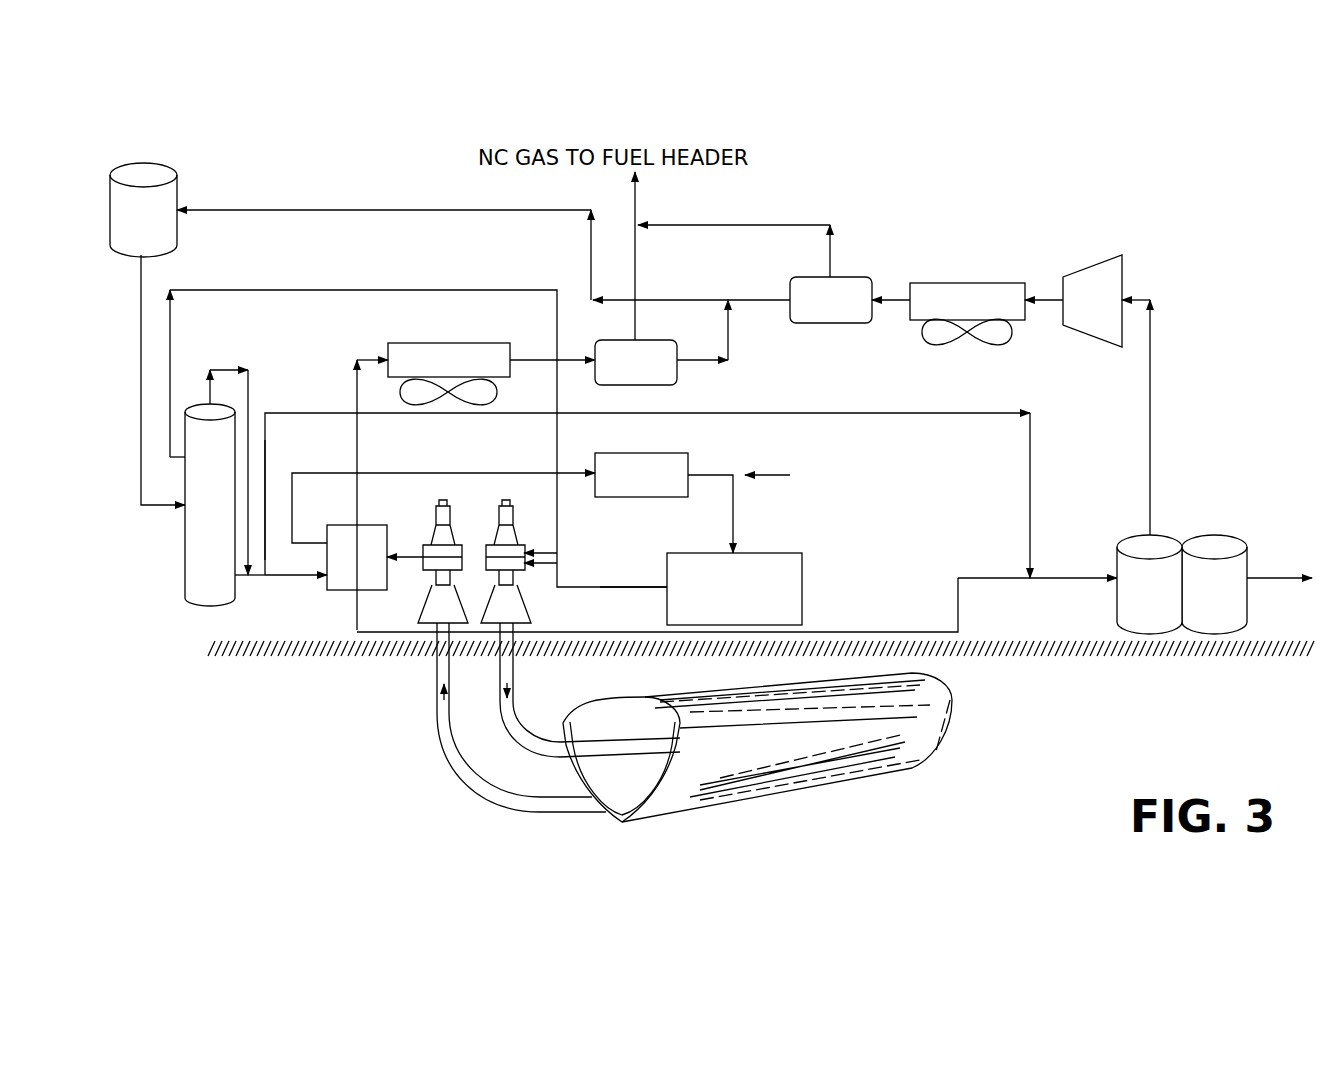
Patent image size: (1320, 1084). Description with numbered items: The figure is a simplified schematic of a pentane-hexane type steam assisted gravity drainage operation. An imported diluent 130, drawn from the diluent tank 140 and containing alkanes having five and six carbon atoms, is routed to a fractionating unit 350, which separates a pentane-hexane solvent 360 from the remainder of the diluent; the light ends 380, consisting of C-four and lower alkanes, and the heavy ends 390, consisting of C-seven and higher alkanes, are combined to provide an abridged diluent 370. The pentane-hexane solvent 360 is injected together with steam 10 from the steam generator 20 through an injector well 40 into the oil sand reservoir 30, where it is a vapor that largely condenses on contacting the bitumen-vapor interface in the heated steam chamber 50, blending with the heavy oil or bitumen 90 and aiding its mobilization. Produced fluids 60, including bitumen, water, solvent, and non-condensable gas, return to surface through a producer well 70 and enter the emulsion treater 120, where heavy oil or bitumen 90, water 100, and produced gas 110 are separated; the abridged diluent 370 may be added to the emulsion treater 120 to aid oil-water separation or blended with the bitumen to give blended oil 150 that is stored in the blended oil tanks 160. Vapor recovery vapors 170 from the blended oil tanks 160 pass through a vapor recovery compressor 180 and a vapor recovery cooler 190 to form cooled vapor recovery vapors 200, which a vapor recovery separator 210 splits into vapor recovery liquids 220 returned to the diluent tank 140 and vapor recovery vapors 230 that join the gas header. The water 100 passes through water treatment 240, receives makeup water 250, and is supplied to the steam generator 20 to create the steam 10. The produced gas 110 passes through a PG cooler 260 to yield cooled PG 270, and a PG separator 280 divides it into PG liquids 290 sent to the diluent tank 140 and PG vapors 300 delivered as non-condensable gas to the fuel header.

The steam 10 is at (560, 590).
The steam generator 20 is at (720, 603).
The oil sand reservoir 30 is at (1045, 772).
The injector well 40 is at (516, 682).
The steam chamber 50 is at (952, 703).
The produced fluids 60 is at (414, 548).
The producer well 70 is at (438, 670).
The heavy oil or bitumen 90 is at (990, 578).
The water 100 is at (386, 473).
The produced gas 110 is at (357, 448).
The emulsion treater 120 is at (336, 571).
The diluent 130 is at (141, 272).
The diluent tank 140 is at (122, 227).
The blended oil 150 is at (1278, 578).
The blended oil tanks 160 is at (1128, 600).
The vapor recovery vapors 170 is at (1150, 428).
The vapor recovery compressor 180 is at (1071, 313).
The vapor recovery cooler 190 is at (946, 315).
The cooled vapor recovery vapors 200 is at (897, 300).
The vapor recovery separator 210 is at (810, 314).
The vapor recovery liquids 220 is at (748, 299).
The vapor recovery vapors 230 is at (792, 225).
The water treatment 240 is at (620, 489).
The makeup water 250 is at (789, 475).
The PG cooler 260 is at (428, 374).
The cooled PG 270 is at (526, 360).
The PG separator 280 is at (615, 376).
The PG liquids 290 is at (728, 355).
The PG vapors 300 is at (636, 285).
The fractionating unit 350 is at (200, 542).
The pentane-hexane solvent 360 is at (296, 290).
The abridged diluent 370 is at (275, 578).
The light ends 380 is at (248, 392).
The heavy ends 390 is at (242, 578).